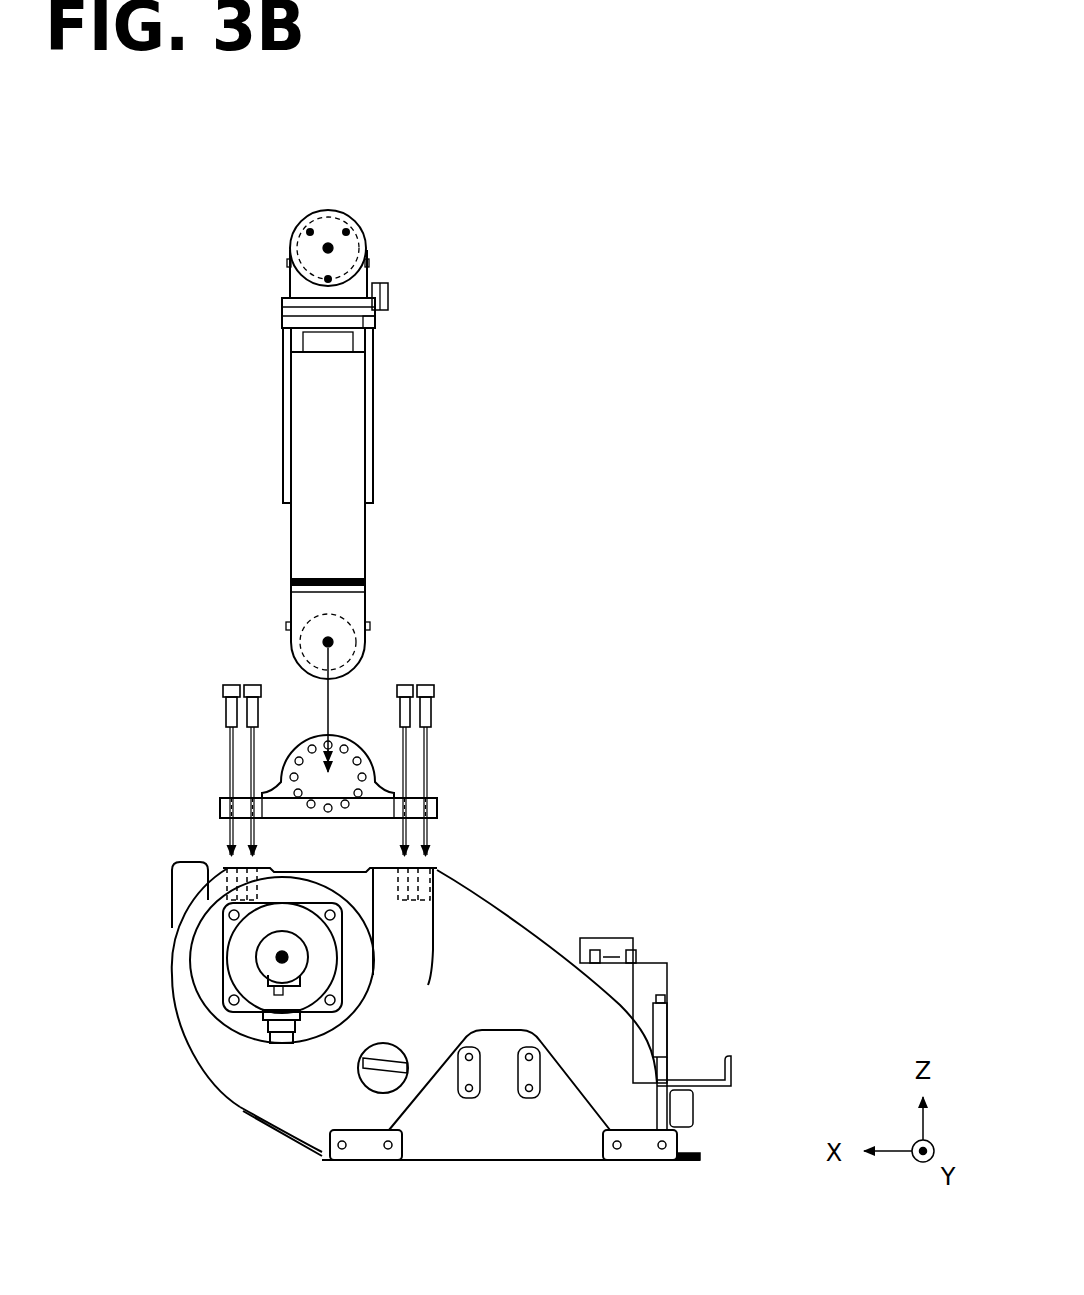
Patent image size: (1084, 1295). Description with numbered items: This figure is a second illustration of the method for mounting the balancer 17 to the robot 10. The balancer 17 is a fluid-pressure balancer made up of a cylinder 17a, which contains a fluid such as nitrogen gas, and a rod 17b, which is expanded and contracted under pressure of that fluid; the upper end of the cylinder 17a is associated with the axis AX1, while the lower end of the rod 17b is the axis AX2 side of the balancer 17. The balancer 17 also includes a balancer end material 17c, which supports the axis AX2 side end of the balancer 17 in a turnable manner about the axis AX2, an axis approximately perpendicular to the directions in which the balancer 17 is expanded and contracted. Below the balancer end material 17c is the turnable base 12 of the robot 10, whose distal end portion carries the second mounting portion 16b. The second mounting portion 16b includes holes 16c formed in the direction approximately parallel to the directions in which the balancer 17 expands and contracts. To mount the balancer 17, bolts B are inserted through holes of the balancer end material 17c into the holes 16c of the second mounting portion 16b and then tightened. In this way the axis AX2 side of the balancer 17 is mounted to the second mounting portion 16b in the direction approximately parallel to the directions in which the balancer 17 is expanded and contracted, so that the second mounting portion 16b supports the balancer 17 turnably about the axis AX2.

The robot 10 is at (548, 199).
The turnable base 12 is at (548, 955).
The second mounting portion 16b is at (326, 862).
The holes 16c is at (214, 888).
The balancer 17 is at (390, 235).
The cylinder 17a is at (372, 376).
The rod 17b is at (365, 560).
The balancer end material 17c is at (355, 736).
The axis AX1 is at (322, 248).
The axis AX2 is at (322, 638).
The bolts B is at (236, 670).